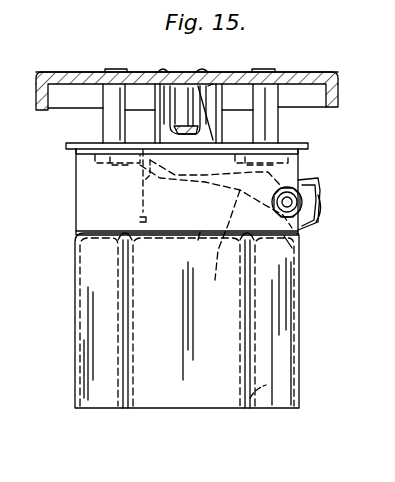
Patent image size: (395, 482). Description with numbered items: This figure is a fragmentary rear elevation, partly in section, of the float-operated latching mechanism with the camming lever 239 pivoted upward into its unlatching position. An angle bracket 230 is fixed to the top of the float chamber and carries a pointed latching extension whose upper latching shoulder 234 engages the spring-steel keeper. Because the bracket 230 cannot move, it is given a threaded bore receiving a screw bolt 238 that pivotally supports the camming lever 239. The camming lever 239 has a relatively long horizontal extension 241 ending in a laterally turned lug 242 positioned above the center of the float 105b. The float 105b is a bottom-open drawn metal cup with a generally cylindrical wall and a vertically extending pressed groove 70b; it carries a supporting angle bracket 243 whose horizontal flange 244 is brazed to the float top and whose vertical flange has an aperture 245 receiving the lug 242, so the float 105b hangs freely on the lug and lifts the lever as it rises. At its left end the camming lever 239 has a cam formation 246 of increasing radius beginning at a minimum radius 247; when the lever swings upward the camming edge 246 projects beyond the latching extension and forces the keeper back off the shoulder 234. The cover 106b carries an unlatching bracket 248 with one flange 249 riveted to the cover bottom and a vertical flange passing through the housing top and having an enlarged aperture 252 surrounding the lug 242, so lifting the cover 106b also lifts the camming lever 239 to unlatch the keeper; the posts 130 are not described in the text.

The cover 106b is at (150, 72).
The posts 130 is at (110, 128).
The enlarged aperture 252 is at (172, 136).
The flange 249 is at (184, 92).
The unlatching bracket 248 is at (218, 86).
The laterally turned lug 242 is at (215, 90).
The angle bracket 230 is at (76, 202).
The horizontal extension 241 is at (129, 181).
The supporting angle bracket 243 is at (138, 219).
The aperture 245 is at (228, 168).
The cam formation 246 is at (318, 192).
The minimum radius 247 is at (316, 206).
The upper latching shoulder 234 is at (300, 205).
The screw bolt 238 is at (289, 206).
The horizontal flange 244 is at (196, 236).
The camming lever 239 is at (220, 235).
The float 105b is at (240, 351).
The pressed groove 70b is at (187, 333).